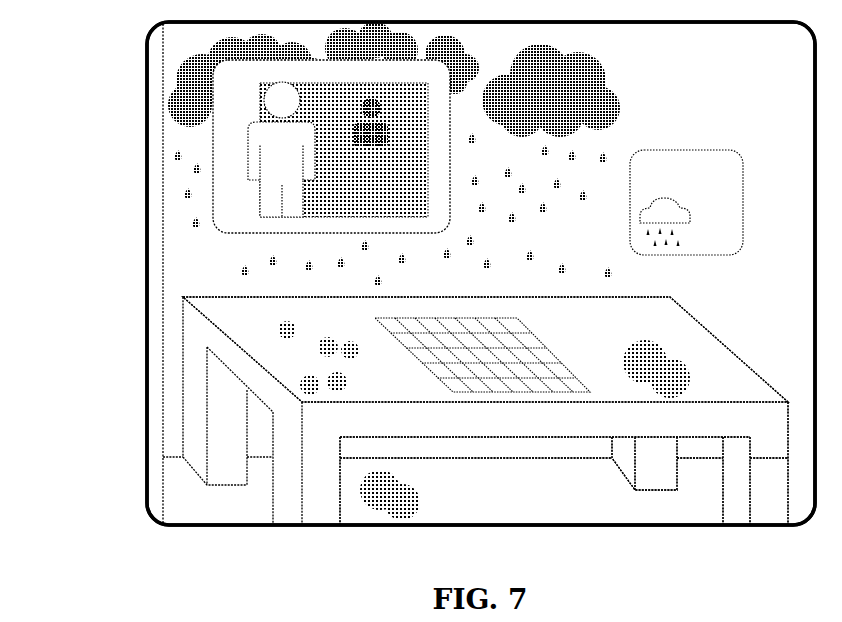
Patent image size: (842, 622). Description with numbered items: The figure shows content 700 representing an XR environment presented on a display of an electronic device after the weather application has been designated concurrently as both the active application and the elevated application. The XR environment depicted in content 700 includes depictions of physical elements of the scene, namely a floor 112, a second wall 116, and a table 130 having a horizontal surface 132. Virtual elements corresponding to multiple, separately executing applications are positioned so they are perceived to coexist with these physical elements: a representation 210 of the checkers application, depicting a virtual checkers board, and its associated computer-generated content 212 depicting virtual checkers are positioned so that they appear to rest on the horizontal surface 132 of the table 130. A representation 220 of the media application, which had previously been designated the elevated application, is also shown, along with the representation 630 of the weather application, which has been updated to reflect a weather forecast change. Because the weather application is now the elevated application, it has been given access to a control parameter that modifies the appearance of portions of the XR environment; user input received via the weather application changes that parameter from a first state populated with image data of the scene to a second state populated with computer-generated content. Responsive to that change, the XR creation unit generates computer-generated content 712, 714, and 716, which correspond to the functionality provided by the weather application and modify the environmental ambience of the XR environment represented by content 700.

The content 700 is at (104, 38).
The second wall 116 is at (737, 87).
The computer-generated content 712 is at (610, 67).
The representation of a media application 220 is at (228, 236).
The representation of the weather application 630 is at (630, 212).
The table 130 is at (700, 323).
The horizontal surface 132 is at (629, 330).
The floor 112 is at (517, 497).
The representation of a checkers application 210 is at (538, 352).
The computer-generated content depicting virtual checkers 212 is at (350, 397).
The computer-generated content 714 is at (673, 372).
The computer-generated content 716 is at (433, 493).